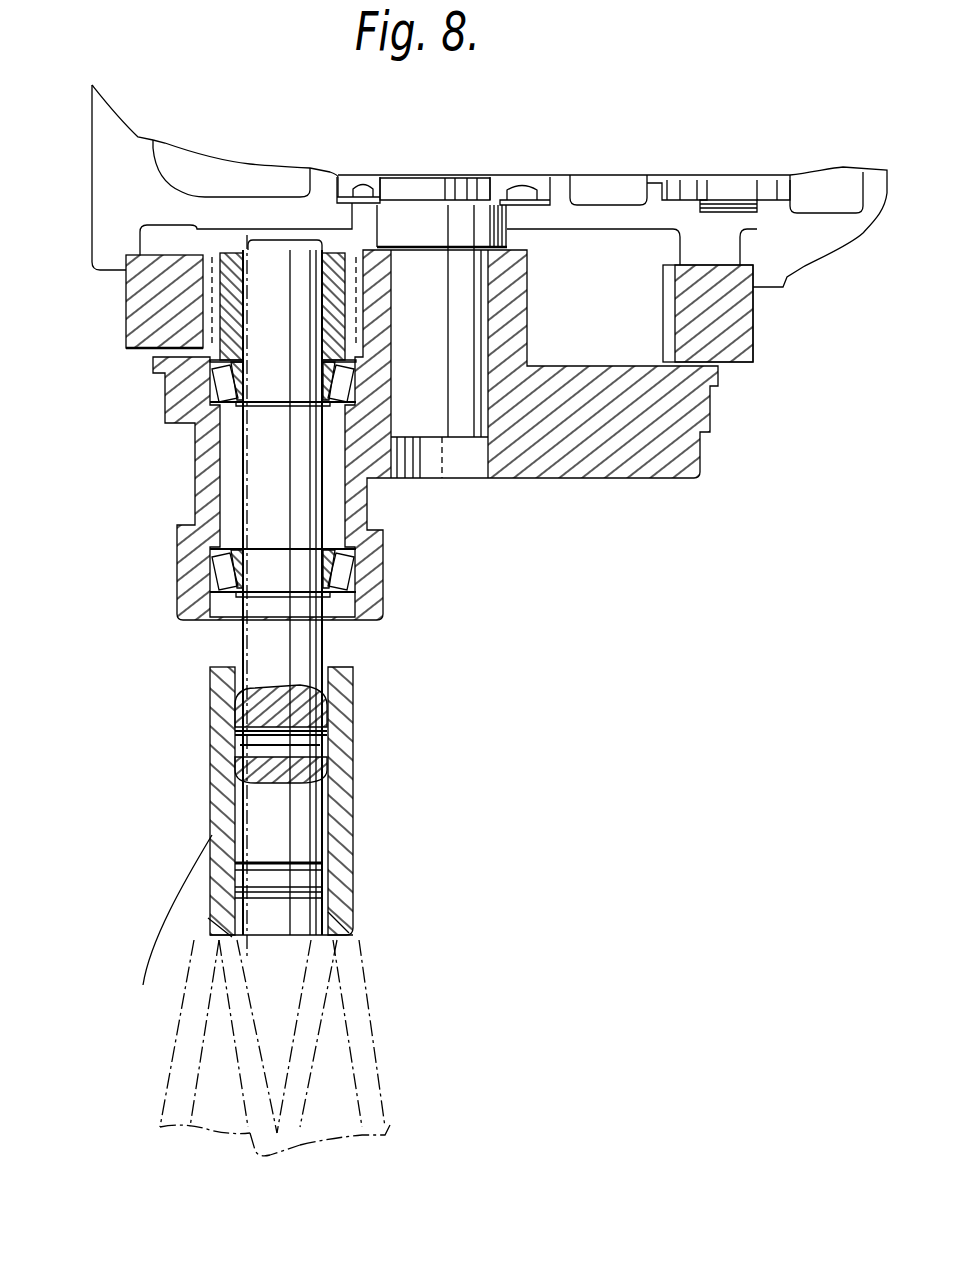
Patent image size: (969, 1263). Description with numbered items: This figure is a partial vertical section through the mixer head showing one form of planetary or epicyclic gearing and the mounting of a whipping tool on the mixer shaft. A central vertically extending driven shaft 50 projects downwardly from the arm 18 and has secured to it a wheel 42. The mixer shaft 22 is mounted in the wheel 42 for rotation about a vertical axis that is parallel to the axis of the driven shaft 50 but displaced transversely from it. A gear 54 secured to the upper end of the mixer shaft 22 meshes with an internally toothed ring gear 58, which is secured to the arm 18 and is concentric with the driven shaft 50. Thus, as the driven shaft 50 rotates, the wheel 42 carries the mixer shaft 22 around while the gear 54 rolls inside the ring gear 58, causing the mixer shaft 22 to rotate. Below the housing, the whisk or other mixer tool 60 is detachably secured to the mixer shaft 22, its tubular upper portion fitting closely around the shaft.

The arm 18 is at (107, 177).
The internally toothed ring gear 58 is at (143, 304).
The gear 54 is at (233, 312).
The mixer shaft 22 is at (258, 472).
The driven shaft 50 is at (423, 283).
The wheel 42 is at (555, 468).
The boot 60 is at (237, 1013).